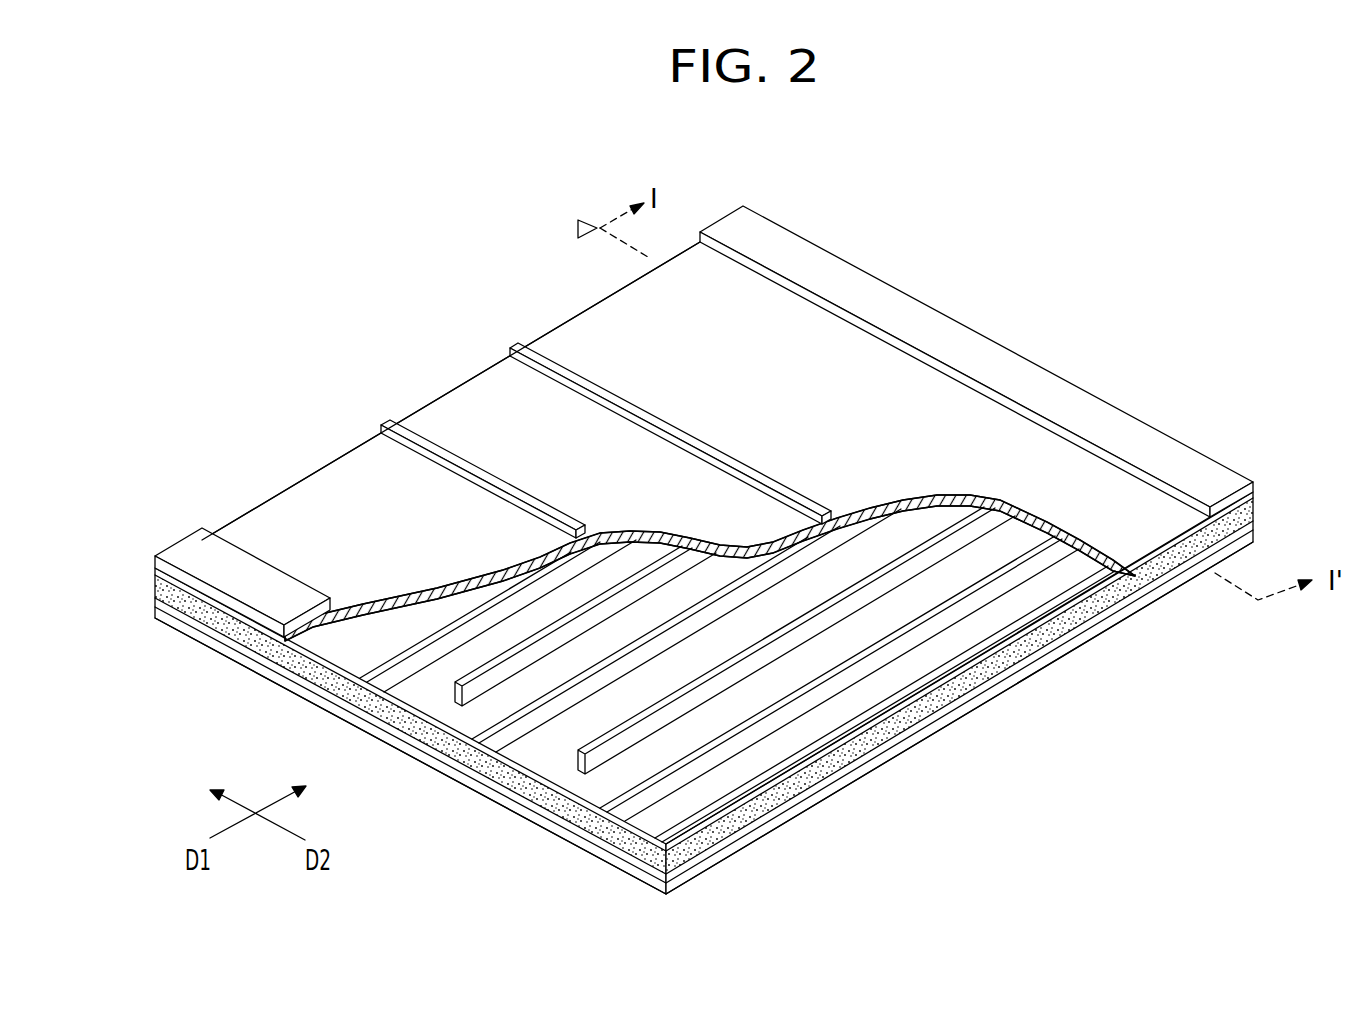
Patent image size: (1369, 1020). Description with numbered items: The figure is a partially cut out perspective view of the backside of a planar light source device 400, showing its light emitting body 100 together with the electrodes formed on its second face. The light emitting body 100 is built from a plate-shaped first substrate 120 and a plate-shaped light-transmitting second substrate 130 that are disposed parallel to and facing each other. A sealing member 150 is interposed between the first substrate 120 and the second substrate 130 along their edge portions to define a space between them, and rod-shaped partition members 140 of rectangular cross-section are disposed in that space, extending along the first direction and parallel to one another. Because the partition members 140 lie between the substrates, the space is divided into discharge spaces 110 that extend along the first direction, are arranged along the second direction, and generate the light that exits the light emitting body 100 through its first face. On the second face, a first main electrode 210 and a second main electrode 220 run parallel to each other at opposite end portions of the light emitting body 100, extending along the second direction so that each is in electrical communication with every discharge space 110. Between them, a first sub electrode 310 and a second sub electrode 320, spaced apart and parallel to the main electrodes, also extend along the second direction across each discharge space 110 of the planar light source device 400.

The light emitting body 100 is at (1216, 688).
The discharge spaces 110 is at (698, 684).
The first substrate 120 is at (1072, 648).
The second substrate 130 is at (1138, 545).
The partition member 140 is at (863, 671).
The sealing member 150 is at (997, 673).
The first main electrode 210 is at (188, 547).
The second main electrode 220 is at (733, 208).
The first sub electrode 310 is at (383, 423).
The second sub electrode 320 is at (513, 343).
The planar light source device 400 is at (945, 290).